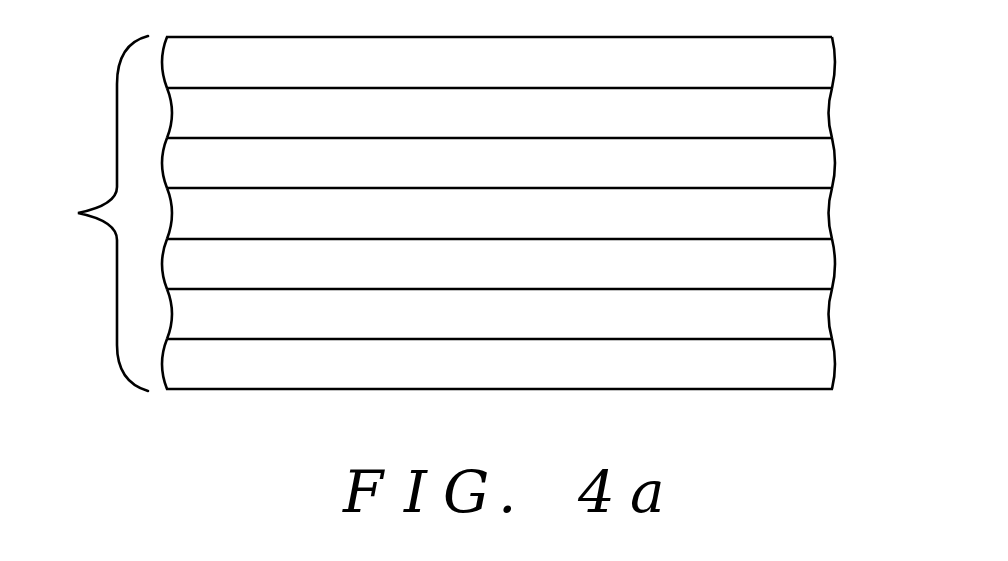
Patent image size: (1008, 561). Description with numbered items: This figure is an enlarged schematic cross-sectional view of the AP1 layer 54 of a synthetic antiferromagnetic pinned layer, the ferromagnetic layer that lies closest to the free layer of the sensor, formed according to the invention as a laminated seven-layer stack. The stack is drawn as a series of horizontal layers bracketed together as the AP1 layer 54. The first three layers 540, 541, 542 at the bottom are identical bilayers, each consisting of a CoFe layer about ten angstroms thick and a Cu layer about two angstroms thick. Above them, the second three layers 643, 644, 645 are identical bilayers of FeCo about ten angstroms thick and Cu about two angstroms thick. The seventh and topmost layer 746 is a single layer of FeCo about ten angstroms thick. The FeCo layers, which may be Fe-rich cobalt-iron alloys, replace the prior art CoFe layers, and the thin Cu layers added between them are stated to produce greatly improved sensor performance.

The AP1 layer 54 is at (89, 213).
The first bilayer of CoFe/Cu 540 is at (813, 363).
The second bilayer of CoFe/Cu 541 is at (813, 315).
The third bilayer of CoFe/Cu 542 is at (813, 259).
The first bilayer of FeCo/Cu 643 is at (813, 211).
The second bilayer of FeCo/Cu 644 is at (813, 162).
The third bilayer of FeCo/Cu 645 is at (813, 112).
The single layer of FeCo 746 is at (813, 62).